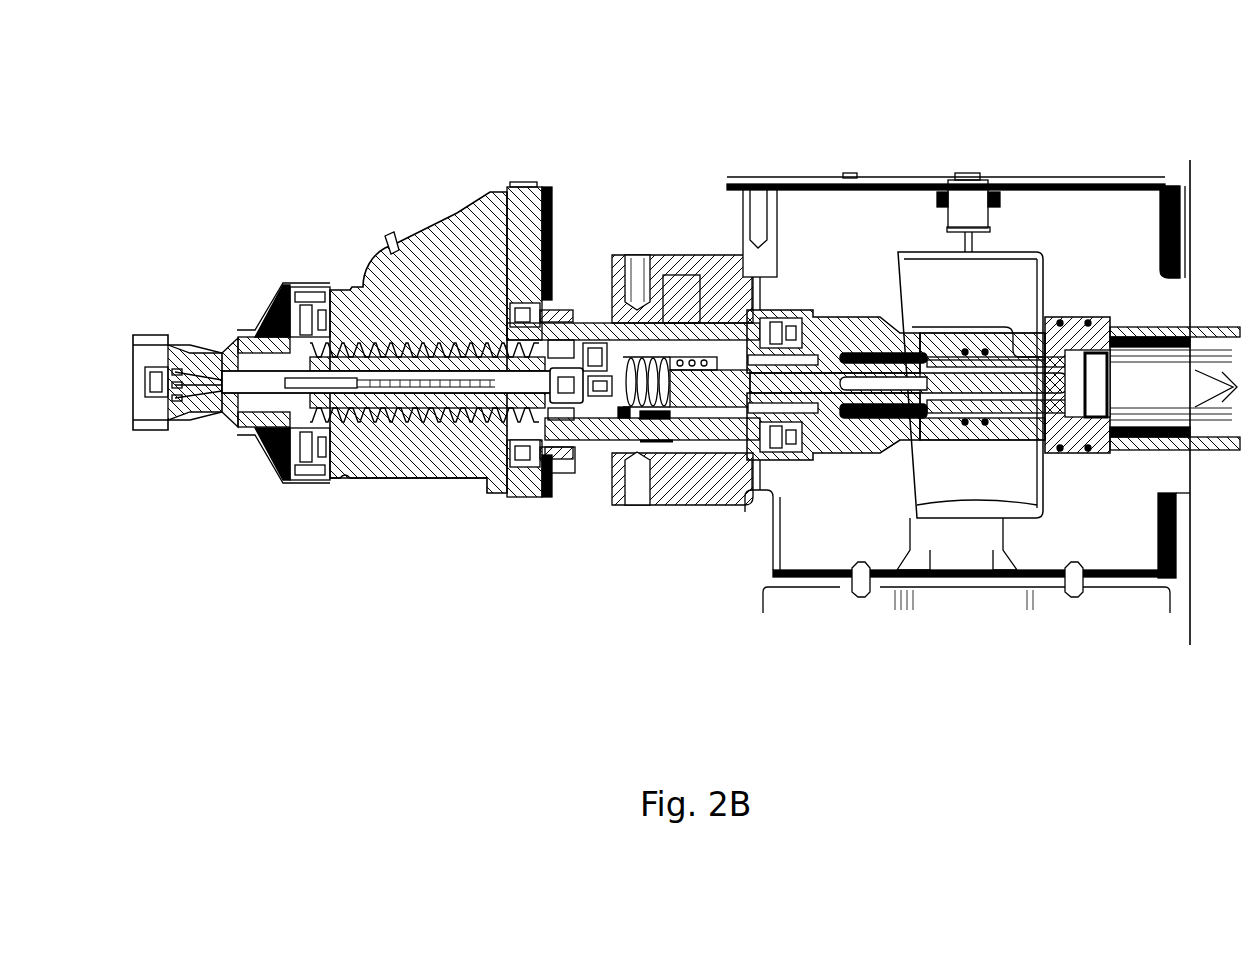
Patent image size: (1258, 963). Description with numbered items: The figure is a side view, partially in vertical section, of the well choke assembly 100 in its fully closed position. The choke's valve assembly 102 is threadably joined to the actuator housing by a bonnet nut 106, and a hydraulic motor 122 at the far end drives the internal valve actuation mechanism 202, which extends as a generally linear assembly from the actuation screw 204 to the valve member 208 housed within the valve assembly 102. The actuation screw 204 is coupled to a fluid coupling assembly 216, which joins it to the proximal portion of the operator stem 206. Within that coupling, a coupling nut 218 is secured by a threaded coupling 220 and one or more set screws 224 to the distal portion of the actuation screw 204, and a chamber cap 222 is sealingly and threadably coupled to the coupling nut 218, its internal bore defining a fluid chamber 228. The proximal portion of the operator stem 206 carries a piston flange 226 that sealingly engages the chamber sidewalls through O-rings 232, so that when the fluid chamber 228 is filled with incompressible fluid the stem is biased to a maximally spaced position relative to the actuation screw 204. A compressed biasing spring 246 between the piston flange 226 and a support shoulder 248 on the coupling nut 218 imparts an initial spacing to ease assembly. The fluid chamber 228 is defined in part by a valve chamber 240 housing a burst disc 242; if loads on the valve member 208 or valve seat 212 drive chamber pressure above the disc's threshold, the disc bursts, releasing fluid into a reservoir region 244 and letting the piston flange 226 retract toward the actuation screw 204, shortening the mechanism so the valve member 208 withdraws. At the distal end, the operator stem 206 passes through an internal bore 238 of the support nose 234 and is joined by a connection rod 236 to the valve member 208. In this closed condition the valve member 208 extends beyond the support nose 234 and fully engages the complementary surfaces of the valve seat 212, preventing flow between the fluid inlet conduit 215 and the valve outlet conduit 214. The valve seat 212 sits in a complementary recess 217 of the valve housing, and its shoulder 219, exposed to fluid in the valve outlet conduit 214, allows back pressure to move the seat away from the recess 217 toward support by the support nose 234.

The well choke assembly 100 is at (952, 78).
The valve assembly 102 is at (1040, 135).
The bonnet nut 106 is at (660, 300).
The hydraulic motor 122 is at (160, 352).
The valve actuation mechanism 202 is at (300, 413).
The actuation screw 204 is at (382, 417).
The operator stem 206 is at (800, 396).
The valve member 208 is at (954, 417).
The valve seat 212 is at (1077, 443).
The valve outlet conduit 214 is at (1160, 362).
The fluid inlet conduit 215 is at (997, 487).
The fluid coupling assembly 216 is at (618, 436).
The recess 217 is at (1097, 317).
The coupling nut 218 is at (556, 425).
The shoulder 219 is at (1120, 418).
The threaded coupling 220 is at (500, 412).
The chamber cap 222 is at (648, 432).
The set screw 224 is at (535, 355).
The piston flange 226 is at (760, 410).
The fluid chamber 228 is at (675, 360).
The O-ring 232 is at (712, 415).
The support nose 234 is at (843, 322).
The connection rod 236 is at (897, 402).
The internal bore 238 is at (867, 360).
The valve chamber 240 is at (603, 400).
The burst disc 242 is at (575, 388).
The reservoir region 244 is at (567, 380).
The biasing spring 246 is at (655, 368).
The support shoulder 248 is at (640, 360).